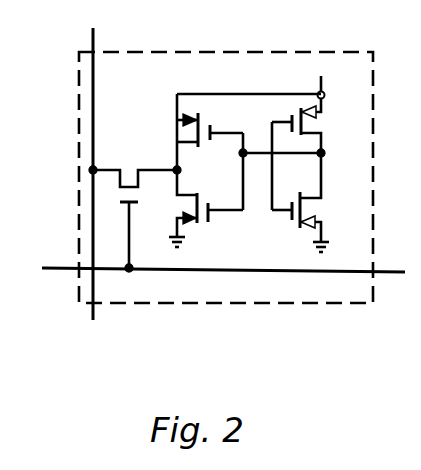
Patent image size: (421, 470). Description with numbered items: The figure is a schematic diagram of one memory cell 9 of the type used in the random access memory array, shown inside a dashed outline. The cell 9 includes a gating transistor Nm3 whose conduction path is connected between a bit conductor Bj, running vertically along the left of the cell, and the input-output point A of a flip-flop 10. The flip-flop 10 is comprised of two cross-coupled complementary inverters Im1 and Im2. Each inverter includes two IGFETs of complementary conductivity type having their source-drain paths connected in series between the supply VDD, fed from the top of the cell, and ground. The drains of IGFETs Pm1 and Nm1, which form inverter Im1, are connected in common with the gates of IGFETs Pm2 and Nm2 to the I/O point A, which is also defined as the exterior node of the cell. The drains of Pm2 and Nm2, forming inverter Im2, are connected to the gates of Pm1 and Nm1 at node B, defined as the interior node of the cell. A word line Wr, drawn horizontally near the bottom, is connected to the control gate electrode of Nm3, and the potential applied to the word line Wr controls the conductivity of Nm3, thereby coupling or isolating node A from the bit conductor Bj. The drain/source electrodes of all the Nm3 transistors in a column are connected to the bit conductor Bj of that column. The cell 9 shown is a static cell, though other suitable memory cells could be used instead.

The memory cell 9 is at (334, 302).
The flip-flop 10 is at (272, 86).
The bit conductor Bj is at (93, 84).
The word line Wr is at (70, 268).
The supply voltage VDD is at (342, 82).
The P-type IGFET of inverter Im1 Pm1 is at (191, 130).
The P-type IGFET of inverter Im2 Pm2 is at (320, 125).
The N-type IGFET of inverter Im1 Nm1 is at (188, 203).
The N-type IGFET of inverter Im2 Nm2 is at (320, 197).
The gating transistor Nm3 is at (133, 208).
The I/O point A is at (178, 170).
The interior node B is at (322, 153).
The inverter Im1 is at (218, 253).
The inverter Im2 is at (293, 254).